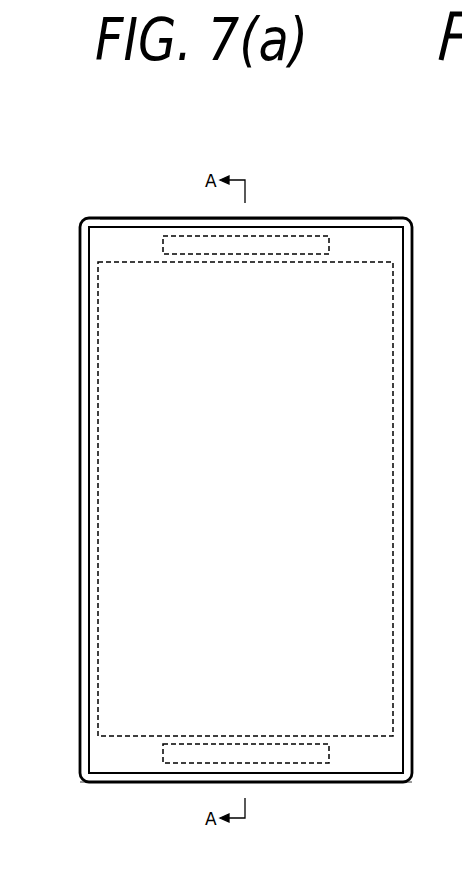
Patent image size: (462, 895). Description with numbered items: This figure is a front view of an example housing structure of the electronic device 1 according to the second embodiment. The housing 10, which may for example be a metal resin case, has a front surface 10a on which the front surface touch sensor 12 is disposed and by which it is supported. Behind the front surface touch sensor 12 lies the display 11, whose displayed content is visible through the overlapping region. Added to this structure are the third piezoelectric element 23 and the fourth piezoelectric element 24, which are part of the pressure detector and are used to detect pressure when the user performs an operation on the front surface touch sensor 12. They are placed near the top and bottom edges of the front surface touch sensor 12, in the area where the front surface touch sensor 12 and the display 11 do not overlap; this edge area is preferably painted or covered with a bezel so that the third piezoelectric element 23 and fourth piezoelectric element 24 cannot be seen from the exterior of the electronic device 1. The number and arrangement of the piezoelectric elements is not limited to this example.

The electronic device 1 is at (118, 794).
The housing 10 is at (413, 582).
The front surface 10a is at (312, 218).
The display 11 is at (123, 503).
The front surface touch sensor 12 is at (89, 444).
The third piezoelectric element 23 is at (197, 236).
The fourth piezoelectric element 24 is at (282, 763).